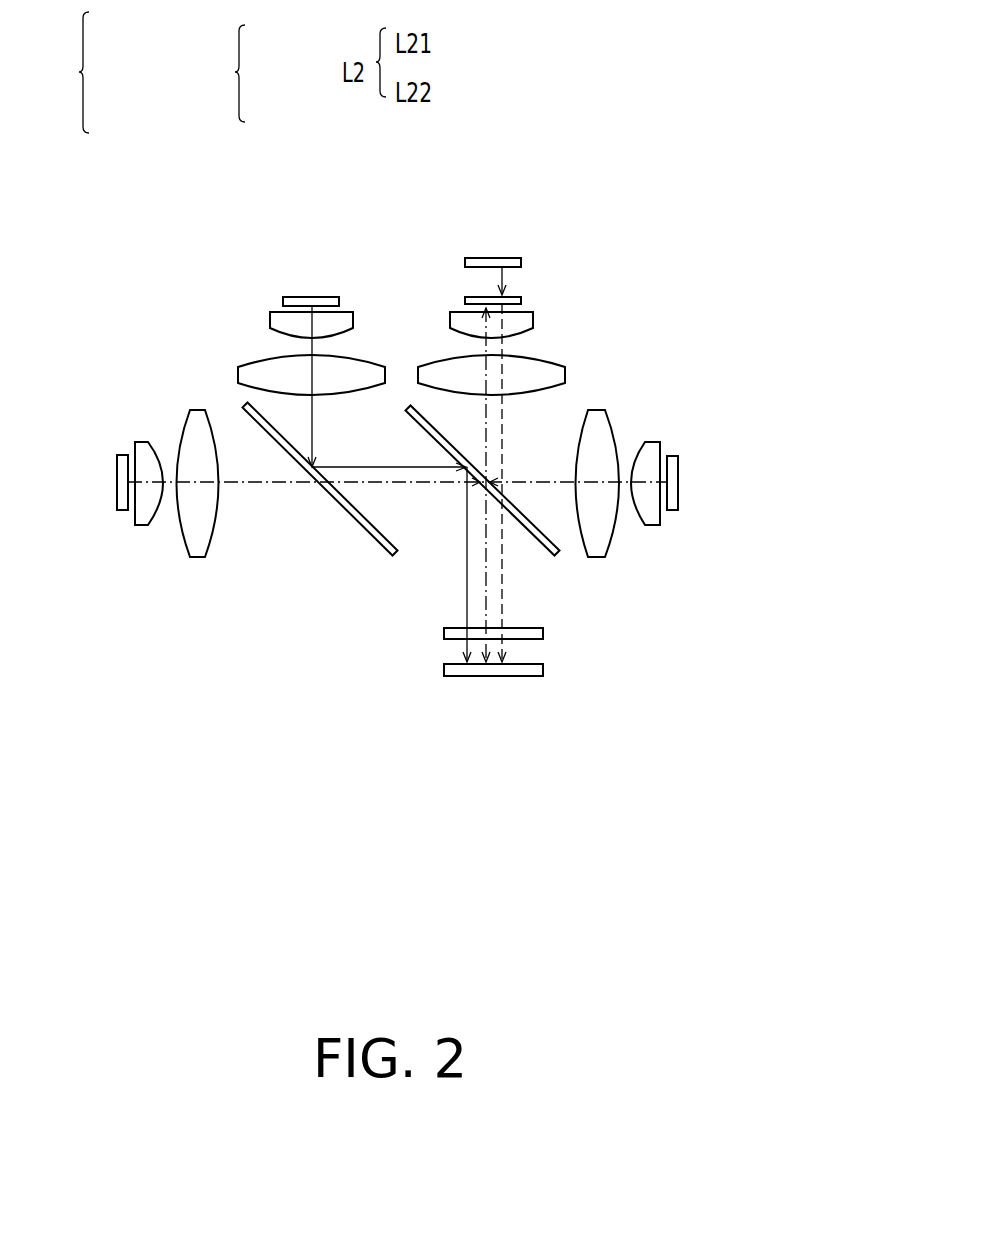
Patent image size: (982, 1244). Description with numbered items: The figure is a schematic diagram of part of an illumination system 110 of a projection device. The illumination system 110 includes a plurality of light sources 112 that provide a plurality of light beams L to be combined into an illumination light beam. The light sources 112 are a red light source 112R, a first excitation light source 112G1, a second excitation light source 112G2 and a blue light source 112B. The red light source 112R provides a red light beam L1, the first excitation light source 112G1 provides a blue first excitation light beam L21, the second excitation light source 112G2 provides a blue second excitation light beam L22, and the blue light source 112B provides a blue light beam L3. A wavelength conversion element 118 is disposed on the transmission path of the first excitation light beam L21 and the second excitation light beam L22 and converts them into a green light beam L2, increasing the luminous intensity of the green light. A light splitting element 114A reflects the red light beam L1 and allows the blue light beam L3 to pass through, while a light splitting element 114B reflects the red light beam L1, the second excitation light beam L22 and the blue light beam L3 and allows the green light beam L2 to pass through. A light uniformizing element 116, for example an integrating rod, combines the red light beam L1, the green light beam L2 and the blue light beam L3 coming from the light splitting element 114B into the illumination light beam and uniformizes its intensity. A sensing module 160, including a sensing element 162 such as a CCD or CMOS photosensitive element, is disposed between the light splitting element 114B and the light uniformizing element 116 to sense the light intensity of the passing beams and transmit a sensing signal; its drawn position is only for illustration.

The illumination system 110 is at (680, 823).
The light sources 112 is at (95, 73).
The red light source 112R is at (308, 293).
The first excitation light source 112G1 is at (521, 262).
The second excitation light source 112G2 is at (678, 468).
The blue light source 112B is at (112, 471).
The light beams L is at (248, 73).
The red light beam L1 is at (310, 347).
The green light beam L2 is at (502, 425).
The blue light beam L3 is at (240, 487).
The first excitation light beam L21 is at (507, 277).
The second excitation light beam L22 is at (622, 483).
The light splitting element 114A is at (373, 542).
The light splitting element 114B is at (543, 555).
The wavelength conversion element 118 is at (523, 302).
The sensing element 162 is at (543, 632).
The sensing module 160 is at (561, 638).
The light uniformizing element 116 is at (543, 670).